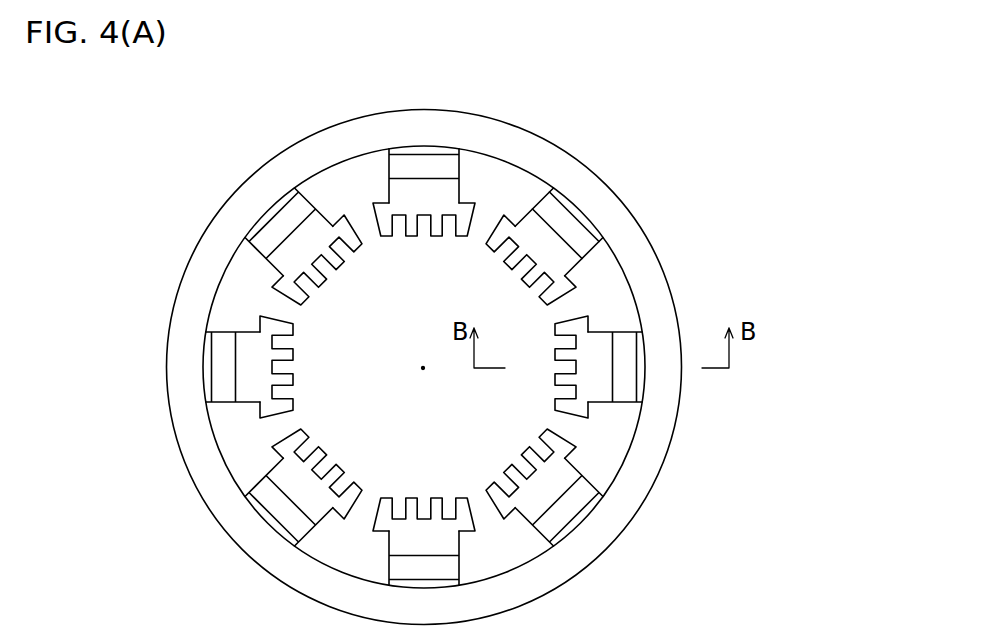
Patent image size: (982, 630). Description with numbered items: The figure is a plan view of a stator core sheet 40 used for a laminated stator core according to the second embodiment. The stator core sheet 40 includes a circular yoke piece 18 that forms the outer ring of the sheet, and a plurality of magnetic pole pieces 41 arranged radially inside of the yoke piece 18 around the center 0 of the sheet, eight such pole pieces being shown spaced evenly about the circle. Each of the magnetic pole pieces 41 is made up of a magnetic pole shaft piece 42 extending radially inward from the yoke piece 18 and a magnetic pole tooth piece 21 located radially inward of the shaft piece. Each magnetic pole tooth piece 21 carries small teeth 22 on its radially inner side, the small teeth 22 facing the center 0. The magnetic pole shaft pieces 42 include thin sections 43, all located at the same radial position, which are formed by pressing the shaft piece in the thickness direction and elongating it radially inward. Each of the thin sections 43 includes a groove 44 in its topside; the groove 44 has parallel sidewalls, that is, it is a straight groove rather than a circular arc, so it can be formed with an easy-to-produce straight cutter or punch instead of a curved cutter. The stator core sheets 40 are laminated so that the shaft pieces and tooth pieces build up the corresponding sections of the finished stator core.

The yoke piece 18 is at (600, 530).
The stator core sheet 40 is at (610, 149).
The magnetic pole pieces 41 is at (586, 170).
The magnetic pole tooth piece 21 is at (497, 223).
The magnetic pole shaft pieces 42 is at (536, 195).
The thin sections 43 is at (560, 223).
The groove 44 is at (627, 352).
The small teeth 22 is at (510, 262).
The center 0 is at (423, 368).